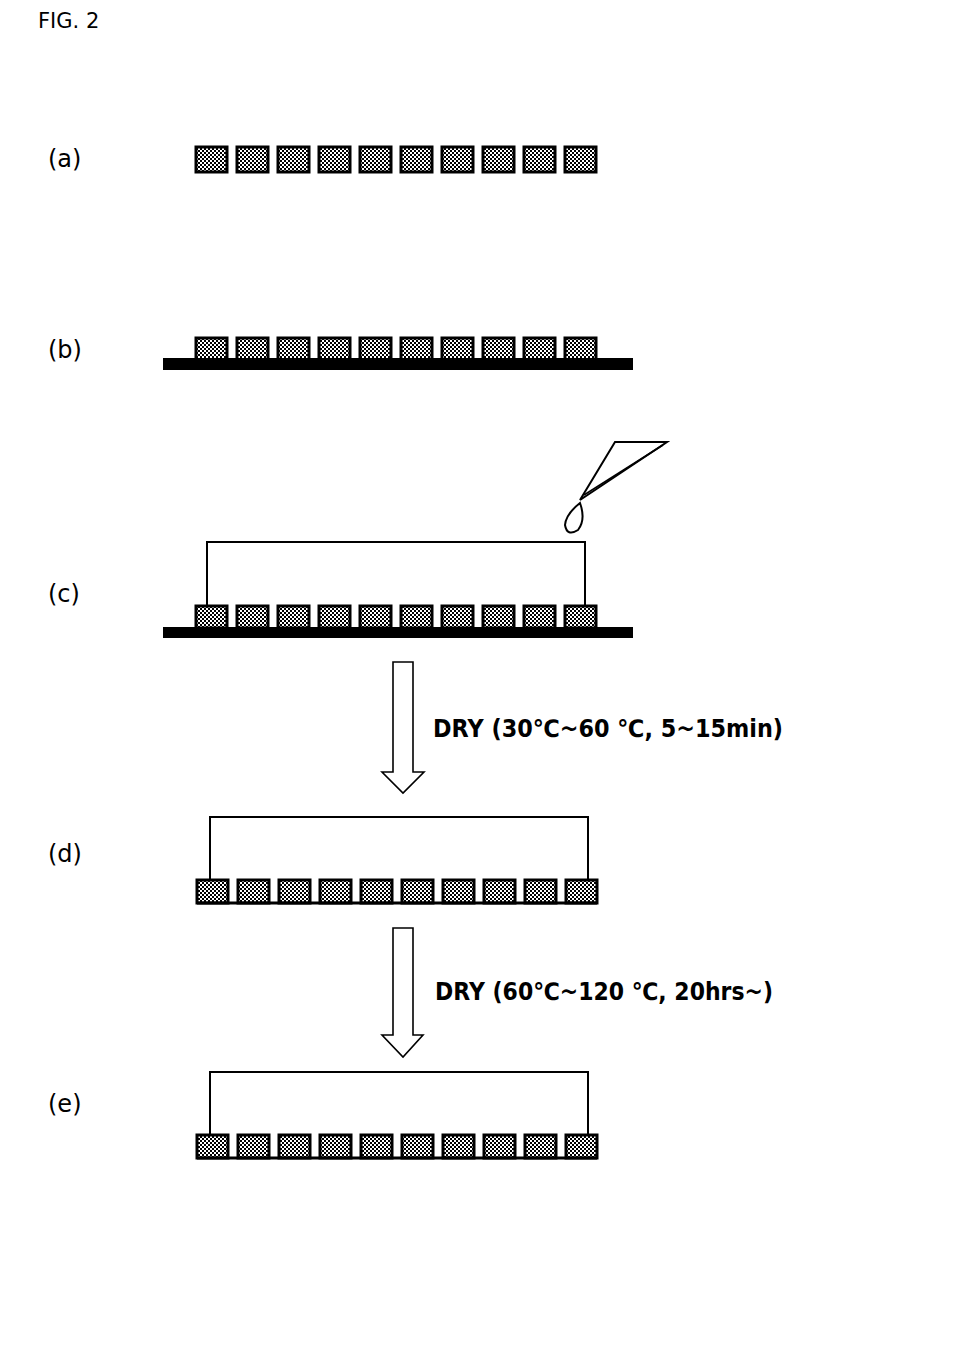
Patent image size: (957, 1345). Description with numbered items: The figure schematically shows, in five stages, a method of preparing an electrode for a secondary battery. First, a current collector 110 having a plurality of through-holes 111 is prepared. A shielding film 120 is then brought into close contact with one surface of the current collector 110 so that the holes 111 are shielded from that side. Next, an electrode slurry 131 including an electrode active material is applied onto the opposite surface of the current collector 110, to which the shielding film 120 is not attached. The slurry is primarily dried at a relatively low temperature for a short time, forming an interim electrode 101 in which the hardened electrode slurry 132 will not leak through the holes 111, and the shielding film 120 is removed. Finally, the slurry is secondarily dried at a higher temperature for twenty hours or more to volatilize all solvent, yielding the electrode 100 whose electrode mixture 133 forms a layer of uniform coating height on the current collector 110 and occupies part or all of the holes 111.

The electrode 100 is at (448, 1074).
The interim electrode 101 is at (448, 815).
The current collector 110 is at (586, 132).
The through-holes 111 is at (516, 172).
The shielding film 120 is at (612, 369).
The electrode slurry 131 is at (572, 557).
The hardened electrode slurry 132 is at (575, 830).
The electrode mixture 133 is at (577, 1090).